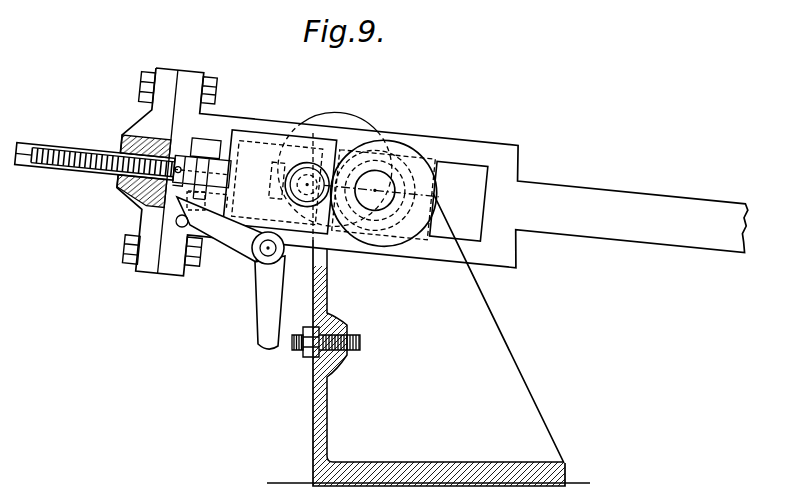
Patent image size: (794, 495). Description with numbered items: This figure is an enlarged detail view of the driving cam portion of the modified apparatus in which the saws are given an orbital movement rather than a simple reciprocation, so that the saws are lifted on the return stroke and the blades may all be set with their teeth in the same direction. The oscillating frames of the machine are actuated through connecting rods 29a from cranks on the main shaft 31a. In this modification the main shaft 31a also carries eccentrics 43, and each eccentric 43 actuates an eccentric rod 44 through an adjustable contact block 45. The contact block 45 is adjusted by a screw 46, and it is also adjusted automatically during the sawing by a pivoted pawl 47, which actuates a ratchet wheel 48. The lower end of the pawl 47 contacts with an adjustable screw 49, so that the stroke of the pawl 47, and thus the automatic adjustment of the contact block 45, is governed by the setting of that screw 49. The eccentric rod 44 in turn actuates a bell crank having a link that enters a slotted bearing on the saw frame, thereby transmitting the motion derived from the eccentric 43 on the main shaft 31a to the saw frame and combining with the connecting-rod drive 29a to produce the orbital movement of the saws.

The connecting rod 29a is at (307, 185).
The main shaft 31a is at (381, 180).
The eccentric 43 is at (428, 184).
The eccentric rod 44 is at (629, 216).
The adjustable contact block 45 is at (283, 148).
The screw 46 is at (84, 141).
The pivoted pawl 47 is at (263, 298).
The ratchet wheel 48 is at (207, 143).
The adjustable screw 49 is at (300, 353).